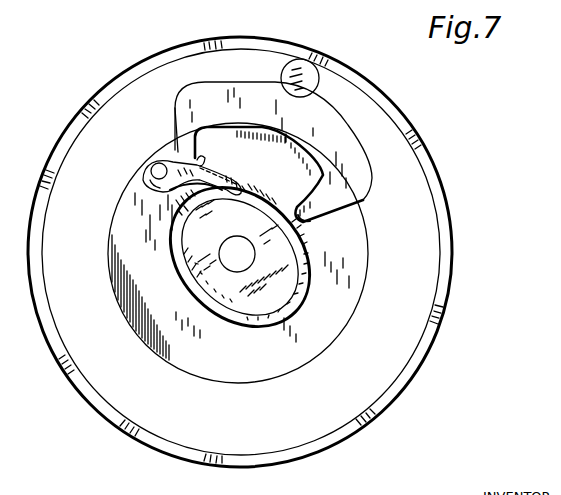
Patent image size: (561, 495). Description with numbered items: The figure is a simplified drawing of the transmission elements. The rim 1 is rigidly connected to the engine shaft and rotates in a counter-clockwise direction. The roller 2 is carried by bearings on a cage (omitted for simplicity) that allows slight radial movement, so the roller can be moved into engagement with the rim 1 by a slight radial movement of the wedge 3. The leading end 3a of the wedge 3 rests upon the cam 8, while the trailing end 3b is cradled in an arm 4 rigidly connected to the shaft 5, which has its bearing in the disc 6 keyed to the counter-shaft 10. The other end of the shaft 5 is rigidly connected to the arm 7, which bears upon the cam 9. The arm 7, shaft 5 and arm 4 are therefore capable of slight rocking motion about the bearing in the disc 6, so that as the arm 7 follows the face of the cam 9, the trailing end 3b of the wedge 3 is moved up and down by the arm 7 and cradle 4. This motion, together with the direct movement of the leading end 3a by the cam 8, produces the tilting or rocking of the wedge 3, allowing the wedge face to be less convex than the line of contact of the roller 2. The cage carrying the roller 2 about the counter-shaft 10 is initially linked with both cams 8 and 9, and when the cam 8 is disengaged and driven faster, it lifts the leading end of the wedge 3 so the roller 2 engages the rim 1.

The rim 1 is at (367, 85).
The roller 2 is at (307, 72).
The wedge 3 is at (340, 148).
The leading end of wedge 3a is at (318, 219).
The trailing end of wedge 3b is at (183, 152).
The arm 4 is at (204, 159).
The shaft 5 is at (157, 170).
The disc 6 is at (125, 215).
The arm 7 is at (232, 178).
The cam 8 is at (297, 250).
The cam 9 is at (240, 257).
The counter-shaft 10 is at (237, 254).